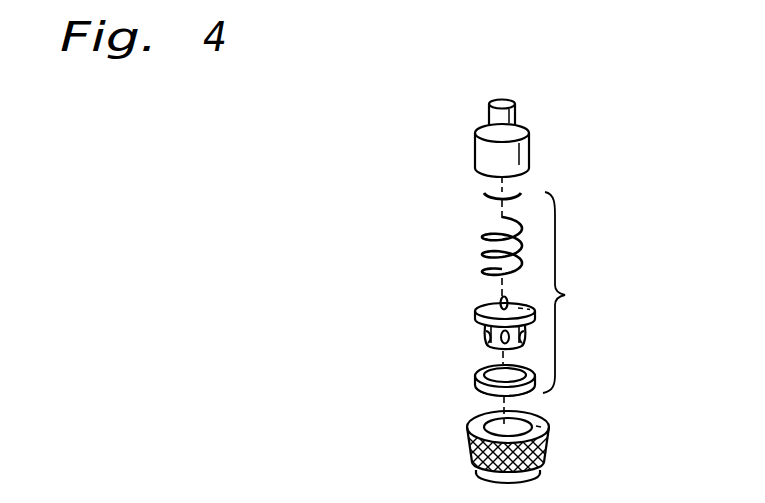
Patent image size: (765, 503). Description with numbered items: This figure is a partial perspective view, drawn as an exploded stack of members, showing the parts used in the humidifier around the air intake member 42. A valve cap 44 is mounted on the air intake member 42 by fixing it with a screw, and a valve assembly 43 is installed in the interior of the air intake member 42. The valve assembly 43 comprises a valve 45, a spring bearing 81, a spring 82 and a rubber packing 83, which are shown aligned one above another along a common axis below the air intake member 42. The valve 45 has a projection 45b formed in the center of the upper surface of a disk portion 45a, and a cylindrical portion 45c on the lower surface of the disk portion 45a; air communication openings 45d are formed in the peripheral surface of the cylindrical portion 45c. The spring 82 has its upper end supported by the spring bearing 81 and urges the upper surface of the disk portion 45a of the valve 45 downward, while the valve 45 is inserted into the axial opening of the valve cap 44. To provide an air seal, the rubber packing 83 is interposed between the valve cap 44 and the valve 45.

The air intake member 42 is at (478, 151).
The spring bearing 81 is at (484, 202).
The spring 82 is at (483, 255).
The valve assembly 43 is at (575, 292).
The valve 45 is at (486, 331).
The disk portion 45a is at (477, 316).
The projection 45b is at (500, 304).
The cylindrical portion 45c is at (477, 370).
The air communication openings 45d is at (522, 338).
The rubber packing 83 is at (480, 392).
The valve cap 44 is at (545, 428).